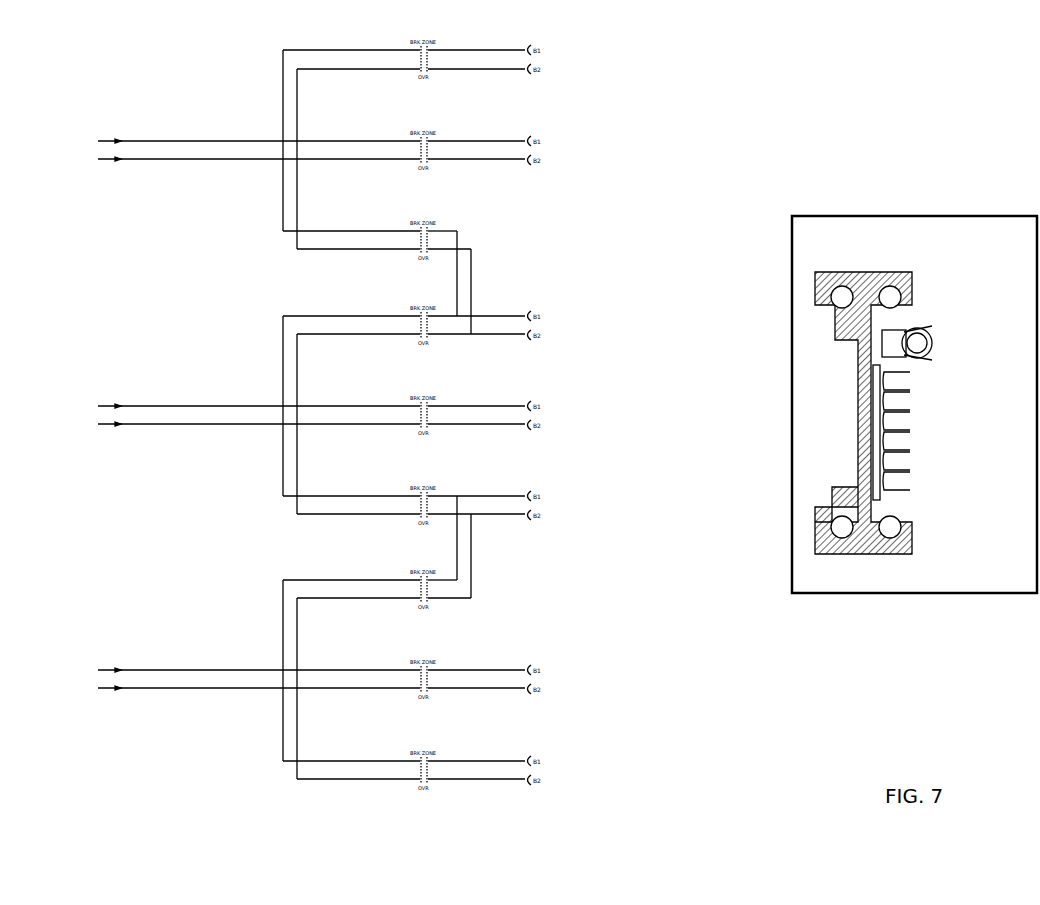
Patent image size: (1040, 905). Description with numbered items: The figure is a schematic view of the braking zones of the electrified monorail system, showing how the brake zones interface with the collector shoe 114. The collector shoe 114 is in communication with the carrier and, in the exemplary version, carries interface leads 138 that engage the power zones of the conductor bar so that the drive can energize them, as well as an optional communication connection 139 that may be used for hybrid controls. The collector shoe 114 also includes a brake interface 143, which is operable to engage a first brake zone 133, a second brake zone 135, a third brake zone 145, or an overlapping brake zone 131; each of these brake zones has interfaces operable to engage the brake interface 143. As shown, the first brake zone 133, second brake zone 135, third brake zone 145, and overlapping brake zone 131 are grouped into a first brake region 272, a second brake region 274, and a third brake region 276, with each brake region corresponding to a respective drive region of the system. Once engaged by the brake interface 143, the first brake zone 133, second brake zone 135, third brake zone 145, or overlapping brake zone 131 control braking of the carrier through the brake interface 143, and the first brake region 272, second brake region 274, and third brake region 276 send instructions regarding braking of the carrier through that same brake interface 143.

The collector shoe 114 is at (917, 231).
The overlapping brake zone 131 is at (493, 299).
The first brake zone 133 is at (588, 74).
The second brake zone 135 is at (560, 167).
The interface leads 138 is at (923, 458).
The optional communication connection 139 is at (918, 325).
The brake interface 143 is at (932, 393).
The third brake zone 145 is at (538, 757).
The first brake region 272 is at (250, 122).
The second brake region 274 is at (247, 380).
The third brake region 276 is at (267, 650).